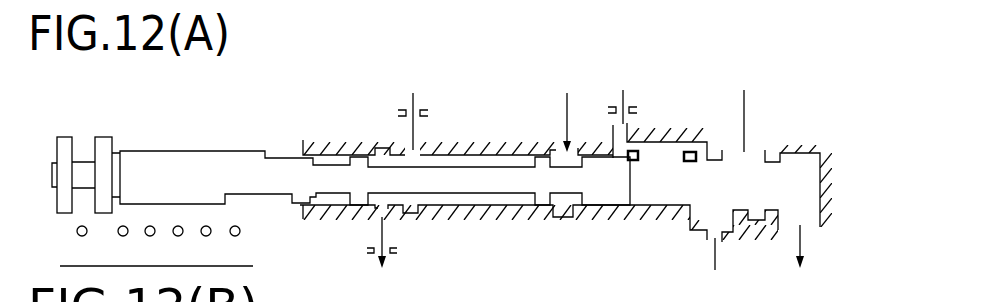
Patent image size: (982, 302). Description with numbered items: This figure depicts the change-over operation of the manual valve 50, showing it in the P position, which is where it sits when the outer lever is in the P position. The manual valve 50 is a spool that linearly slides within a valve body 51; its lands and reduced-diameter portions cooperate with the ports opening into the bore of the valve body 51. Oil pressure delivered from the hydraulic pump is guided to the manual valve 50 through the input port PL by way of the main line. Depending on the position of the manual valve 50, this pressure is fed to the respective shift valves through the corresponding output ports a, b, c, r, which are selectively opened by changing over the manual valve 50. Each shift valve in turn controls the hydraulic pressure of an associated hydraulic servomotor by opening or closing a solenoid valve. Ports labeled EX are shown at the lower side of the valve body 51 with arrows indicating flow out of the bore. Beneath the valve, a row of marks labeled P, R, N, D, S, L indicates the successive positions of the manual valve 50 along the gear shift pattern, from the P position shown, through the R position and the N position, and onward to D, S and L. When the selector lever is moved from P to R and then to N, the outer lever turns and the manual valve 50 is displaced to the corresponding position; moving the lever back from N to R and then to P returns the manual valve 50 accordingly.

The manual valve 50 is at (198, 163).
The valve body 51 is at (310, 146).
The output port r is at (424, 142).
The input port PL is at (563, 150).
The output port a is at (632, 124).
The output port b is at (706, 246).
The output port c is at (756, 150).
The exhaust port EX is at (589, 259).
The P position P is at (80, 246).
The R position R is at (122, 246).
The N position N is at (150, 246).
The drive position D is at (178, 246).
The second position S is at (205, 246).
The low position L is at (233, 246).